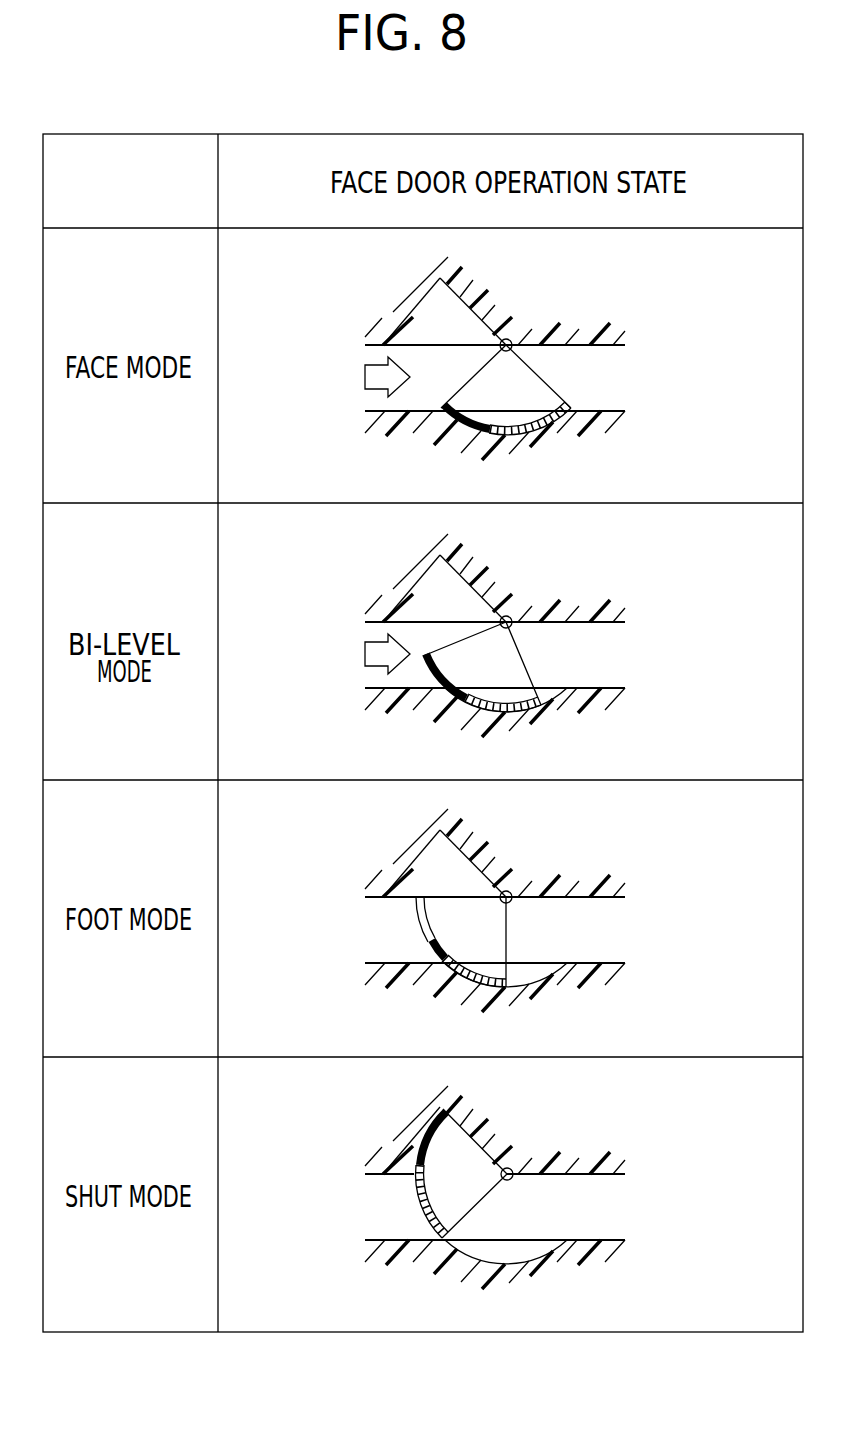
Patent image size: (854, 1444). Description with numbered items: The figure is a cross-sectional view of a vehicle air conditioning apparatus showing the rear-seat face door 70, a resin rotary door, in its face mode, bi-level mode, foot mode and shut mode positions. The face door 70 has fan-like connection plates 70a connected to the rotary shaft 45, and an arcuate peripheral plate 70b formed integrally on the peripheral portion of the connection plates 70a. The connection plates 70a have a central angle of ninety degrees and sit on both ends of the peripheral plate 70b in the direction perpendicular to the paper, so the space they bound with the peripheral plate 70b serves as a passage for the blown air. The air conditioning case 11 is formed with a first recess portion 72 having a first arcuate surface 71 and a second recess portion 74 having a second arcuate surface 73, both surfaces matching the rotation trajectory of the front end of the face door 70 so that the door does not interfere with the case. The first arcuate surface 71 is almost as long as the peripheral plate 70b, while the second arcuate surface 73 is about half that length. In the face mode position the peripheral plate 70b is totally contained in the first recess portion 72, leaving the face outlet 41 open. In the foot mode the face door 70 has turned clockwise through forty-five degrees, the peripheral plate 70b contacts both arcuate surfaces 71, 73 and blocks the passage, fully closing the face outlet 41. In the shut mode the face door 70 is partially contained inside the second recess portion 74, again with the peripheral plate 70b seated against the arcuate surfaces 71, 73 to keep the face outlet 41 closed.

The air conditioning case 11 is at (408, 314).
The face outlet 41 is at (578, 363).
The rotary shaft 45 is at (512, 340).
The face door 70 is at (565, 385).
The connection plates 70a is at (568, 418).
The peripheral plate 70b is at (523, 437).
The first arcuate surface 71 is at (453, 427).
The first recess portion 72 is at (555, 693).
The second arcuate surface 73 is at (410, 345).
The second recess portion 74 is at (483, 312).